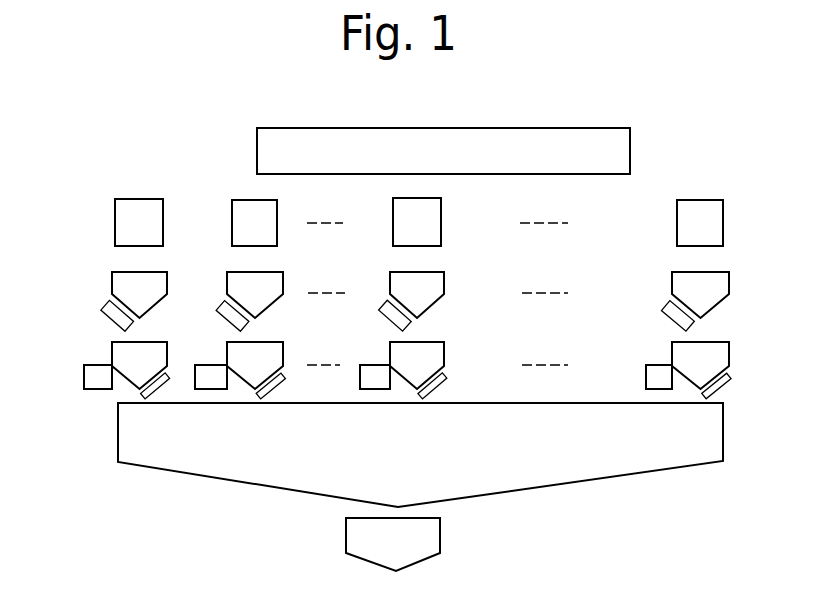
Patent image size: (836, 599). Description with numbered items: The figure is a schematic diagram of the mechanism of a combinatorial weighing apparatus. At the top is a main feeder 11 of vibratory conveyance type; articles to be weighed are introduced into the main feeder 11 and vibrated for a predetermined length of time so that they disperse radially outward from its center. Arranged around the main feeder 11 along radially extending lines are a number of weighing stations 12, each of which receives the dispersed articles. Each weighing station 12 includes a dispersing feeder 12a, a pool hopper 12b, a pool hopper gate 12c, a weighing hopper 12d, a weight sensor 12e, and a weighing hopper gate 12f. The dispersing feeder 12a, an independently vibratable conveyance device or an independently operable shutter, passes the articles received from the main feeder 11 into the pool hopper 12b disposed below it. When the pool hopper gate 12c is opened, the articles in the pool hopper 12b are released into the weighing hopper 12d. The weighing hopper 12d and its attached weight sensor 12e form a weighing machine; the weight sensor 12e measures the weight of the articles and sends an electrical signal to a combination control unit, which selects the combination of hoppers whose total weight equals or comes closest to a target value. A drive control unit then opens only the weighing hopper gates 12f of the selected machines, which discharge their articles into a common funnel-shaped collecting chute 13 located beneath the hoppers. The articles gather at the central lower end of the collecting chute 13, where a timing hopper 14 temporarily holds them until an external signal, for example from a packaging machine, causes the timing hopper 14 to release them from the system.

The main feeder 11 is at (460, 128).
The weighing station 12 is at (108, 142).
The dispersing feeder 12a is at (137, 207).
The pool hopper 12b is at (117, 273).
The pool hopper gate 12c is at (103, 305).
The weighing hopper 12d is at (120, 355).
The weight sensor 12e is at (90, 389).
The weighing hopper gate 12f is at (152, 393).
The collecting chute 13 is at (553, 487).
The timing hopper 14 is at (435, 538).